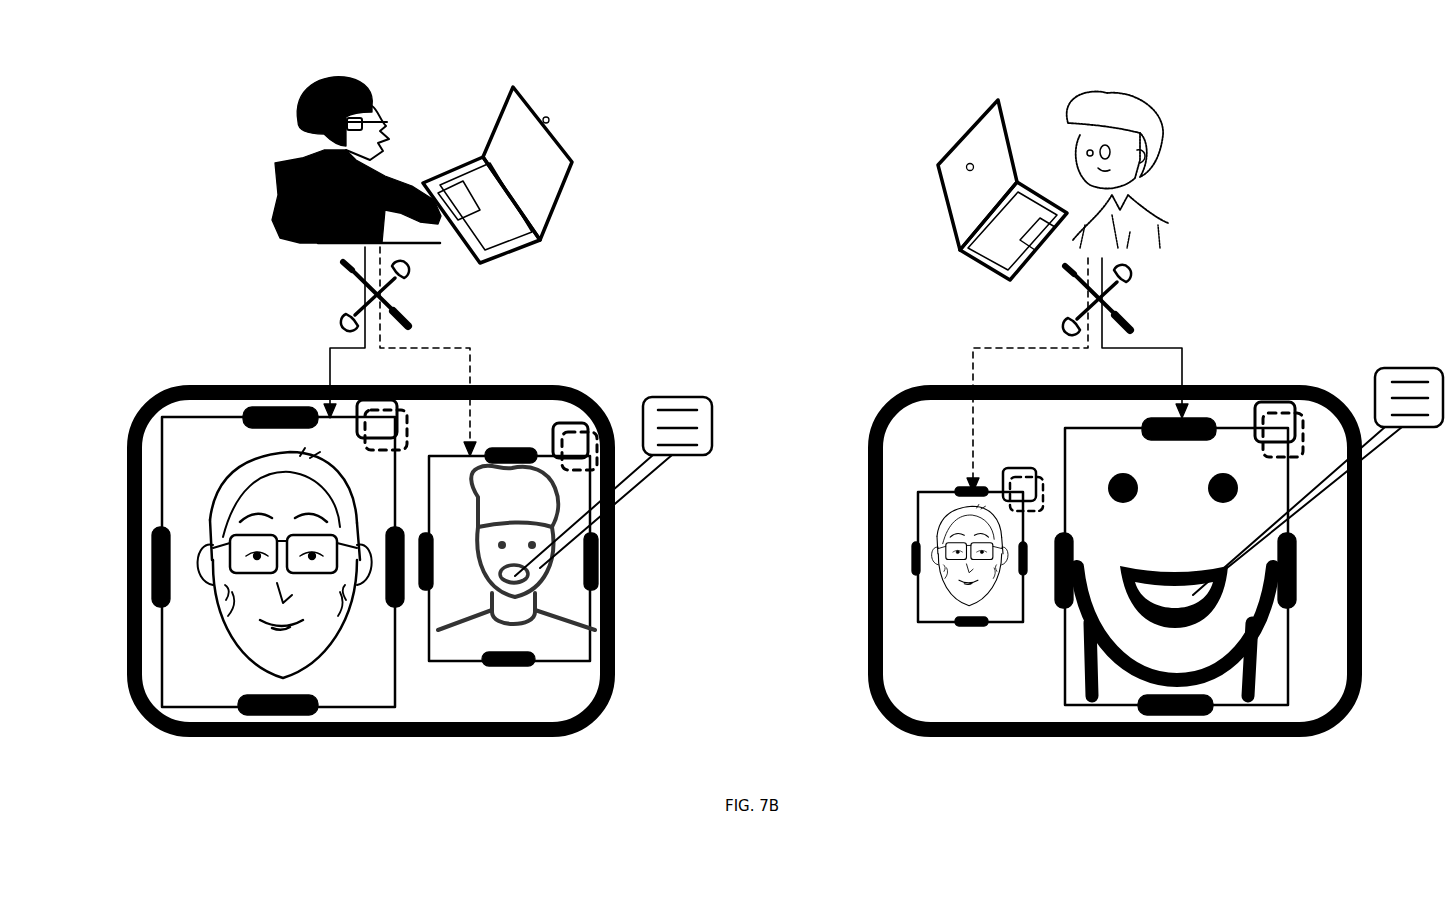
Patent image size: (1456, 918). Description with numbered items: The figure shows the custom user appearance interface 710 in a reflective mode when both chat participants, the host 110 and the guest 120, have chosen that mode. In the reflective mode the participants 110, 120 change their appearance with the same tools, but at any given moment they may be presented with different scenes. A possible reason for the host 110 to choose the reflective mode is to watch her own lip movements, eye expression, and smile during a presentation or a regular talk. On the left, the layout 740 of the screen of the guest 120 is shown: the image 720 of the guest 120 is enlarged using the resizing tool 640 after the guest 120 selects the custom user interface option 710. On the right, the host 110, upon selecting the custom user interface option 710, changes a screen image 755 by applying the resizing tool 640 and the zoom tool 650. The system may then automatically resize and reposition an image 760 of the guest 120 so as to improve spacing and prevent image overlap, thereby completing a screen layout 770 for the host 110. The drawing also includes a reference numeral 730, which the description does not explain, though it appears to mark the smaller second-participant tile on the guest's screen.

The host 110 is at (1162, 127).
The guest 120 is at (298, 103).
The resizing tool 640 is at (278, 406).
The zoom tool 650 is at (1295, 398).
The custom user appearance interface 710 is at (358, 294).
The image of the guest 720 is at (202, 482).
The second user video representation 730 is at (590, 612).
The layout of the screen of the guest 740 is at (532, 385).
The screen image 755 is at (1234, 436).
The image of the guest 760 is at (866, 452).
The screen layout 770 is at (915, 390).